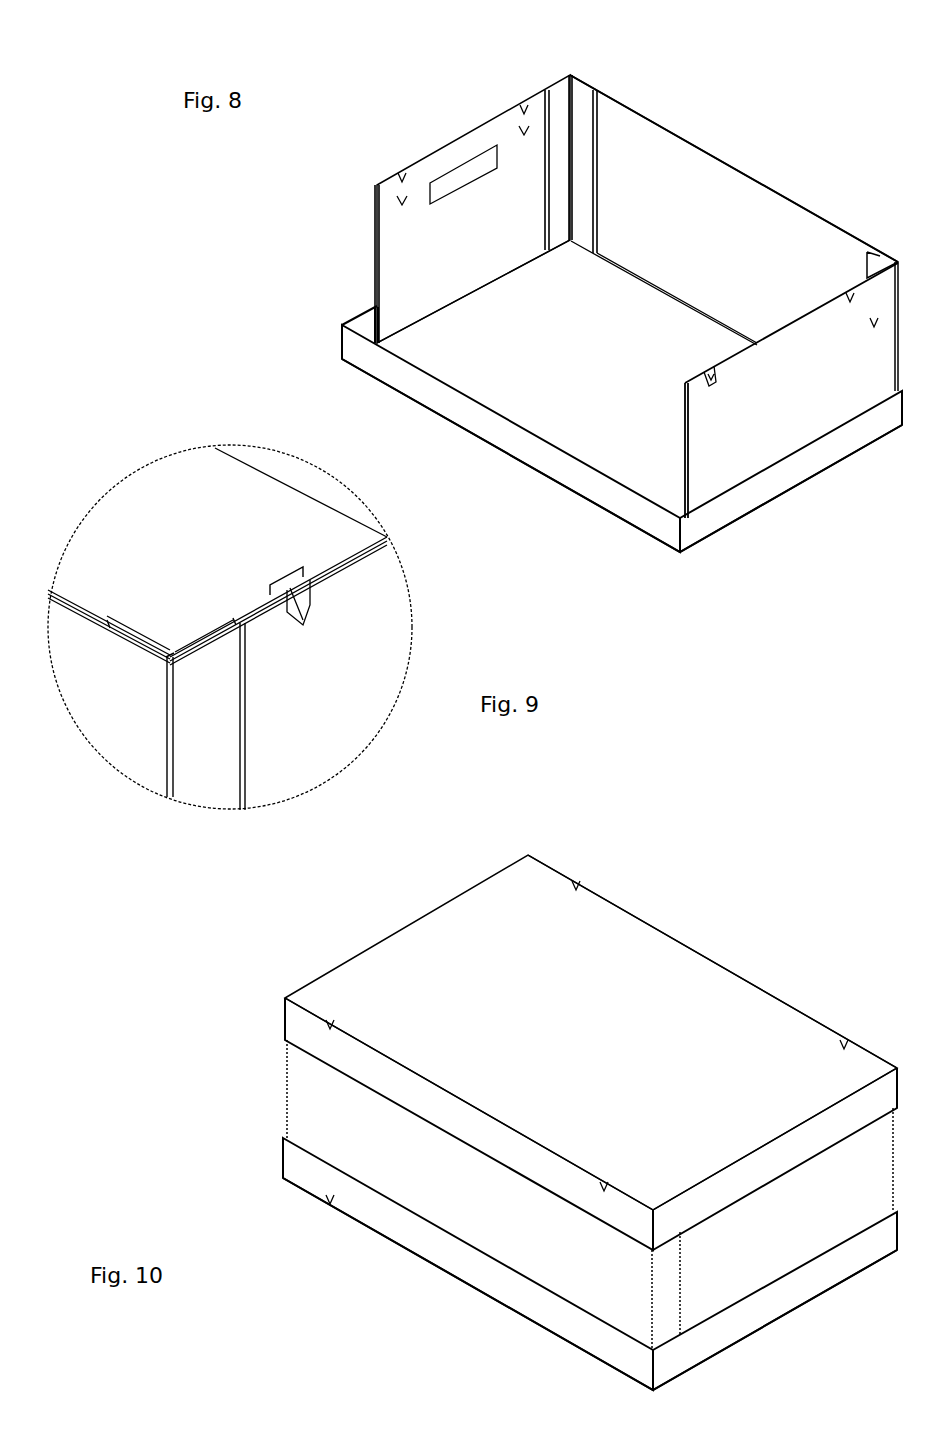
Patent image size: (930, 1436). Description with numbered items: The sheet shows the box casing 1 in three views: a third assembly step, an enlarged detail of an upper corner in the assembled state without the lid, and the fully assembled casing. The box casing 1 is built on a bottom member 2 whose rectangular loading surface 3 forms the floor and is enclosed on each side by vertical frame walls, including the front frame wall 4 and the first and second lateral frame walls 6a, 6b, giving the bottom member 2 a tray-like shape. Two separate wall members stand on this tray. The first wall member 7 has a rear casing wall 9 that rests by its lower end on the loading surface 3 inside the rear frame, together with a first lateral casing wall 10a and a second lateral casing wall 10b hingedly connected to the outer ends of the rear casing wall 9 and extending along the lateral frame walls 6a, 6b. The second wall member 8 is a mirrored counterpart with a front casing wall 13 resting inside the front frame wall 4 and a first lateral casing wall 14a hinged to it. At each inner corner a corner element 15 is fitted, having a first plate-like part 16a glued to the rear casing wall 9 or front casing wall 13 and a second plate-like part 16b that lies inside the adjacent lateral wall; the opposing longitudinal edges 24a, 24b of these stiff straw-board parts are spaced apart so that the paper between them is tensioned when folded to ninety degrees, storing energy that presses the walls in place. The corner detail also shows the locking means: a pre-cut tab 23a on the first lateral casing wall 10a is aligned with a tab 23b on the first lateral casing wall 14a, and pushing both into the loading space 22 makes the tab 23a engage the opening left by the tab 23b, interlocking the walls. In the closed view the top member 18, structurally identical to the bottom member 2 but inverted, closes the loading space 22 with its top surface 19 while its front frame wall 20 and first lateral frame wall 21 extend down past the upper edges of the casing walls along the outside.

In FIG. 10, the box casing 1 is at (310, 1268).
In FIG. 8, the bottom member 2 is at (700, 545).
In FIG. 10, the bottom member 2 is at (688, 1368).
In FIG. 8, the loading surface 3 is at (448, 347).
In FIG. 9, the loading surface 3 is at (107, 545).
In FIG. 8, the front frame wall 4 is at (503, 430).
In FIG. 10, the front frame wall 4 is at (448, 1248).
In FIG. 8, the first lateral frame wall 6a is at (780, 480).
In FIG. 10, the first lateral frame wall 6a is at (770, 1300).
In FIG. 8, the second lateral frame wall 6b is at (345, 315).
In FIG. 8, the first wall member 7 is at (643, 117).
In FIG. 10, the first wall member 7 is at (838, 1185).
In FIG. 10, the second wall member 8 is at (265, 1083).
In FIG. 8, the rear casing wall 9 is at (680, 175).
In FIG. 9, the rear casing wall 9 is at (270, 468).
In FIG. 8, the first lateral casing wall 10a is at (885, 350).
In FIG. 9, the first lateral casing wall 10a is at (303, 750).
In FIG. 10, the first lateral casing wall 10a is at (820, 1227).
In FIG. 8, the second lateral casing wall 10b is at (456, 147).
In FIG. 9, the front casing wall 13 is at (108, 710).
In FIG. 10, the front casing wall 13 is at (332, 1137).
In FIG. 9, the first lateral casing wall 14a is at (203, 770).
In FIG. 10, the first lateral casing wall 14a is at (665, 1305).
In FIG. 8, the corner element 15 is at (876, 265).
In FIG. 8, the first plate-like part 16a is at (582, 100).
In FIG. 9, the first plate-like part 16a is at (120, 625).
In FIG. 8, the second plate-like part 16b is at (562, 103).
In FIG. 9, the second plate-like part 16b is at (200, 632).
In FIG. 10, the top member 18 is at (620, 905).
In FIG. 10, the top surface 19 is at (670, 985).
In FIG. 10, the front frame wall 20 is at (415, 1090).
In FIG. 10, the first lateral frame wall 21 is at (767, 1168).
In FIG. 8, the loading space 22 is at (577, 408).
In FIG. 9, the loading space 22 is at (170, 495).
In FIG. 8, the tab 23a is at (705, 370).
In FIG. 9, the tab 23a is at (298, 605).
In FIG. 9, the tab 23b is at (285, 583).
In FIG. 9, the longitudinal edge 24a is at (163, 656).
In FIG. 9, the longitudinal edge 24b is at (172, 660).